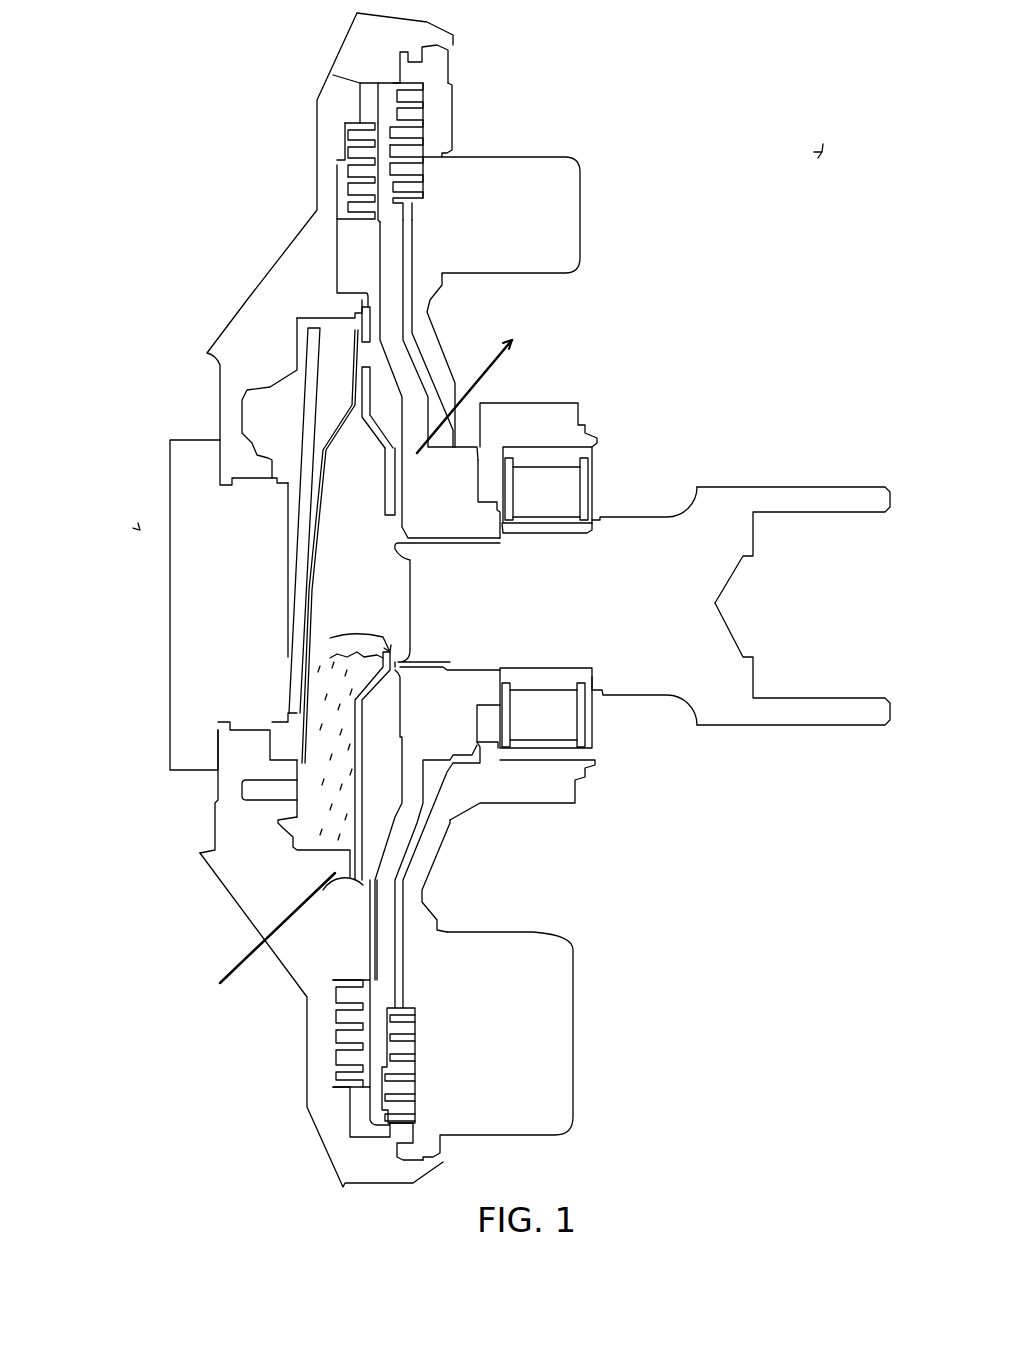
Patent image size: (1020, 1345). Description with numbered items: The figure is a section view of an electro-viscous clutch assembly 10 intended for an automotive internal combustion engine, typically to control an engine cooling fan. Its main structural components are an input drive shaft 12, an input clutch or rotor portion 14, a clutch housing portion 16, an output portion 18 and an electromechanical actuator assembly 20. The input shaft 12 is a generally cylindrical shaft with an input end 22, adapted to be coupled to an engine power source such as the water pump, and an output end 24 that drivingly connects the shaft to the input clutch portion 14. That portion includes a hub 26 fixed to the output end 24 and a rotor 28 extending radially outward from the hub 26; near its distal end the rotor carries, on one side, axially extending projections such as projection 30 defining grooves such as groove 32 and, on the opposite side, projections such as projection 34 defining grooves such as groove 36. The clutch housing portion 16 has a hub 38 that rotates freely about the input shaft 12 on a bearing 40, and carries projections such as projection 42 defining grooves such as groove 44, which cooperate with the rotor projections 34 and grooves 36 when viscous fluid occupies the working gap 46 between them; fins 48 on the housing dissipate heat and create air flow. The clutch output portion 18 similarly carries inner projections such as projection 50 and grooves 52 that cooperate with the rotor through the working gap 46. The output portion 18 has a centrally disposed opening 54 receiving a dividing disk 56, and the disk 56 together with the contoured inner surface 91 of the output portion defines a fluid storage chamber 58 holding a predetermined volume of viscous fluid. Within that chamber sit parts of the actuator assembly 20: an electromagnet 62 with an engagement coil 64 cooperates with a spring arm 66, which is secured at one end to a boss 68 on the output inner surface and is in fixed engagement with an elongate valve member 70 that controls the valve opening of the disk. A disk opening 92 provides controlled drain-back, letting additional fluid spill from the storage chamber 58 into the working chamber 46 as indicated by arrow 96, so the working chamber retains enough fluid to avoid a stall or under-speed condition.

The electro-viscous clutch assembly 10 is at (833, 118).
The input drive shaft 12 is at (788, 485).
The input clutch portion 14 is at (489, 379).
The clutch housing portion 16 is at (433, 342).
The output portion 18 is at (253, 288).
The electromechanical actuator assembly 20 is at (140, 530).
The input end 22 is at (808, 725).
The output end 24 is at (456, 575).
The hub 26 is at (455, 472).
The rotor 28 is at (395, 270).
The projection 30 is at (350, 220).
The groove 32 is at (363, 193).
The projection 34 is at (430, 85).
The groove 36 is at (413, 103).
The hub 38 is at (562, 418).
The bearing 40 is at (563, 475).
The projection 42 is at (423, 98).
The groove 44 is at (423, 108).
The working gap 46 is at (427, 160).
The fins 48 is at (565, 202).
The projection 50 is at (350, 137).
The groove 52 is at (343, 125).
The centrally disposed opening 54 is at (257, 948).
The dividing disk 56 is at (352, 848).
The fluid storage chamber 58 is at (310, 737).
The electromagnet 62 is at (220, 523).
The engagement coil 64 is at (280, 537).
The spring arm 66 is at (307, 437).
The boss 68 is at (267, 770).
The valve member 70 is at (350, 397).
The inner surface 91 is at (375, 827).
The disk opening 92 is at (320, 572).
The arrow 96 is at (320, 640).